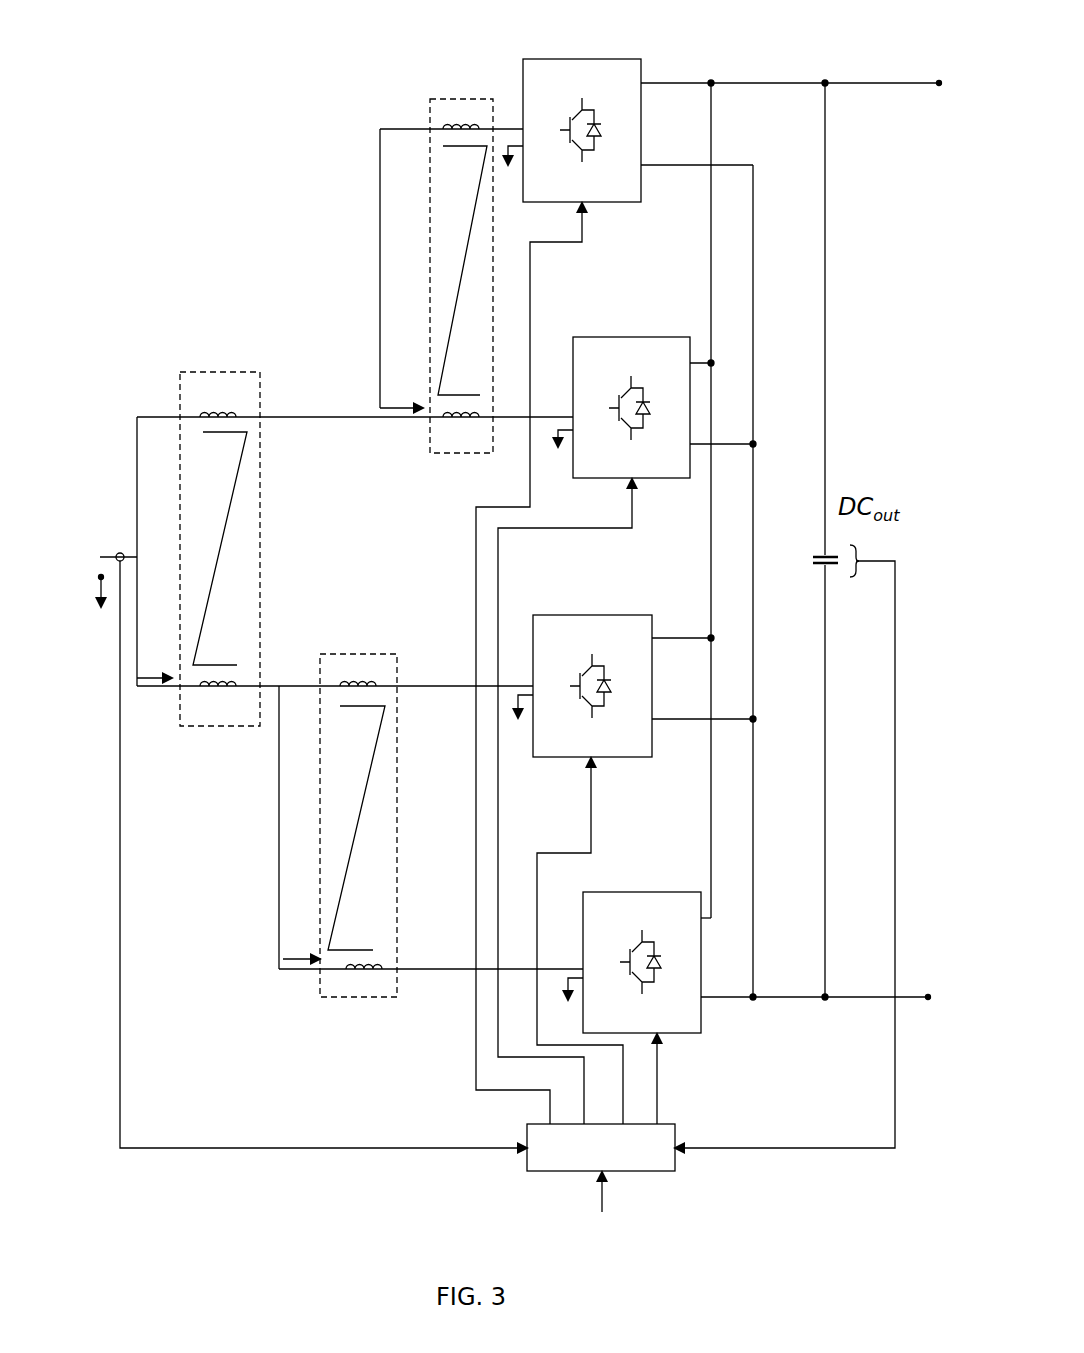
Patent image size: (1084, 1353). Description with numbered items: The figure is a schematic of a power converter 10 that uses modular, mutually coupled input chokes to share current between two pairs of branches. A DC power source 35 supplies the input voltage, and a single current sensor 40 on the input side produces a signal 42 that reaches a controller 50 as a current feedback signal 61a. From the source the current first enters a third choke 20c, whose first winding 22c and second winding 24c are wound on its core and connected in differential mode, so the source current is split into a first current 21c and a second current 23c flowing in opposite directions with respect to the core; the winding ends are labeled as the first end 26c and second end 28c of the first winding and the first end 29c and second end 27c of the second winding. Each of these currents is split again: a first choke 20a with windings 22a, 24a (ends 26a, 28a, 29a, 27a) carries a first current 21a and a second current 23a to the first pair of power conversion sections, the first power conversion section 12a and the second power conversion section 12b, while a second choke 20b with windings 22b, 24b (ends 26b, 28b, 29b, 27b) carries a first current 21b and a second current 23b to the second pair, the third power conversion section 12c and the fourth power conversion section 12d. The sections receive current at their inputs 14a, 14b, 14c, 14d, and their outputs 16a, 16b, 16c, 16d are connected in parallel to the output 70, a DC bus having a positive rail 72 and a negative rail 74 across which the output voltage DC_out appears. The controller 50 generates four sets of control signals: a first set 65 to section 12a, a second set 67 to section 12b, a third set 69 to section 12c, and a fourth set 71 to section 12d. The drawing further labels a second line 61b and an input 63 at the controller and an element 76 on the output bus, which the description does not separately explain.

The power converter 10 is at (327, 55).
The first power conversion section 12a is at (643, 891).
The second power conversion section 12b is at (587, 614).
The third power conversion section 12c is at (625, 336).
The fourth power conversion section 12d is at (578, 58).
The cell input 14a is at (570, 955).
The cell input 14b is at (528, 672).
The cell input 14c is at (568, 400).
The cell input 14d is at (518, 120).
The cell output 16a is at (708, 928).
The cell output 16b is at (663, 626).
The cell output 16c is at (695, 338).
The cell output 16d is at (653, 72).
The first choke 20a is at (352, 653).
The second choke 20b is at (440, 98).
The third choke 20c is at (214, 371).
The first current 21a is at (300, 948).
The first current 21b is at (400, 405).
The first current 21c is at (160, 675).
The first winding 22a is at (362, 980).
The first winding 22b is at (455, 430).
The first winding 22c is at (215, 700).
The second current 23a is at (305, 678).
The second current 23b is at (422, 126).
The second current 23c is at (158, 412).
The second winding 24a is at (355, 708).
The second winding 24b is at (460, 148).
The second winding 24c is at (215, 434).
The first end of first winding 26a is at (315, 980).
The first end of first winding 26b is at (425, 425).
The first end of first winding 26c is at (170, 698).
The second end of second winding 27a is at (410, 680).
The second end of second winding 27b is at (515, 120).
The second end of second winding 27c is at (272, 425).
The second end of first winding 28a is at (400, 980).
The second end of first winding 28b is at (503, 425).
The second end of first winding 28c is at (265, 698).
The first end of second winding 29a is at (315, 670).
The first end of second winding 29b is at (425, 138).
The first end of second winding 29c is at (170, 428).
The power source 35 is at (95, 530).
The current sensor 40 is at (120, 545).
The signal 42 is at (120, 1015).
The controller 50 is at (653, 1172).
The current feedback signal 61a is at (345, 1149).
The controller input line 61b is at (797, 1149).
The controller input 63 is at (600, 1200).
The first set of control signals 65 is at (660, 1092).
The second set of control signals 67 is at (625, 1075).
The third set of control signals 69 is at (580, 1075).
The fourth set of control signals 71 is at (495, 1091).
The output 70 is at (900, 75).
The positive rail 72 is at (857, 82).
The negative rail 74 is at (860, 998).
The output capacitor 76 is at (818, 570).